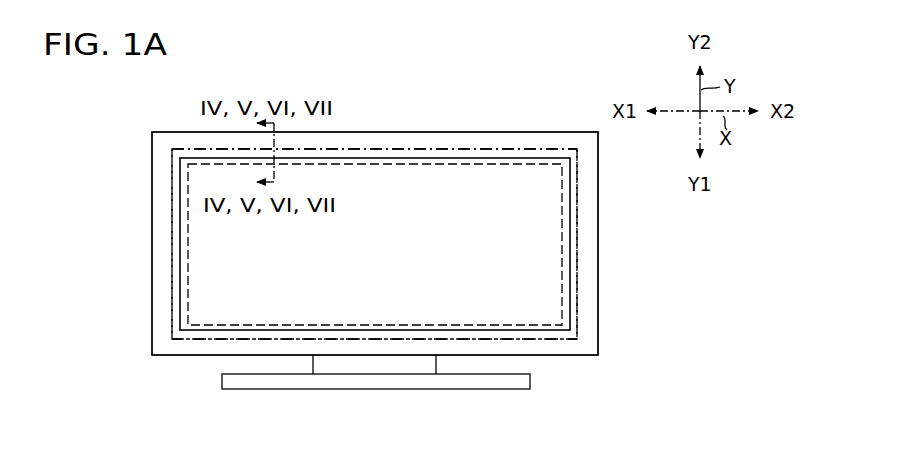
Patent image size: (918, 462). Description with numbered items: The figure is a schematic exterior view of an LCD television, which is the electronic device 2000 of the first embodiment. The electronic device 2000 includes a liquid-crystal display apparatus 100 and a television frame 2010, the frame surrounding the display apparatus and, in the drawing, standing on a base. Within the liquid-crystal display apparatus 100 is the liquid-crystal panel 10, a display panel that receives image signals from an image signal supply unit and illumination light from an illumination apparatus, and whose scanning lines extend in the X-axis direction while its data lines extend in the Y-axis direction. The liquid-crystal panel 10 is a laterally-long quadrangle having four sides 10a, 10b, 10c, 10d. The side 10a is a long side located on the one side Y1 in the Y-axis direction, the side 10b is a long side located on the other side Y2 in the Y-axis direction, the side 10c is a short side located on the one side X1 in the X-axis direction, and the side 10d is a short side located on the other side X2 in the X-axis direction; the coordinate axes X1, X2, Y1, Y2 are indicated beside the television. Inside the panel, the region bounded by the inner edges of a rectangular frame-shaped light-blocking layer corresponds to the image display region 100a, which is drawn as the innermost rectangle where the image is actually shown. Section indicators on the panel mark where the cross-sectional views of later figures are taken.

The electronic device 2000 is at (242, 72).
The television frame 2010 is at (587, 303).
The liquid-crystal panel 10 is at (586, 219).
The side 10a is at (384, 339).
The side 10b is at (402, 149).
The side 10c is at (172, 243).
The side 10d is at (578, 253).
The liquid-crystal display apparatus 100 is at (469, 140).
The image display region 100a is at (537, 172).